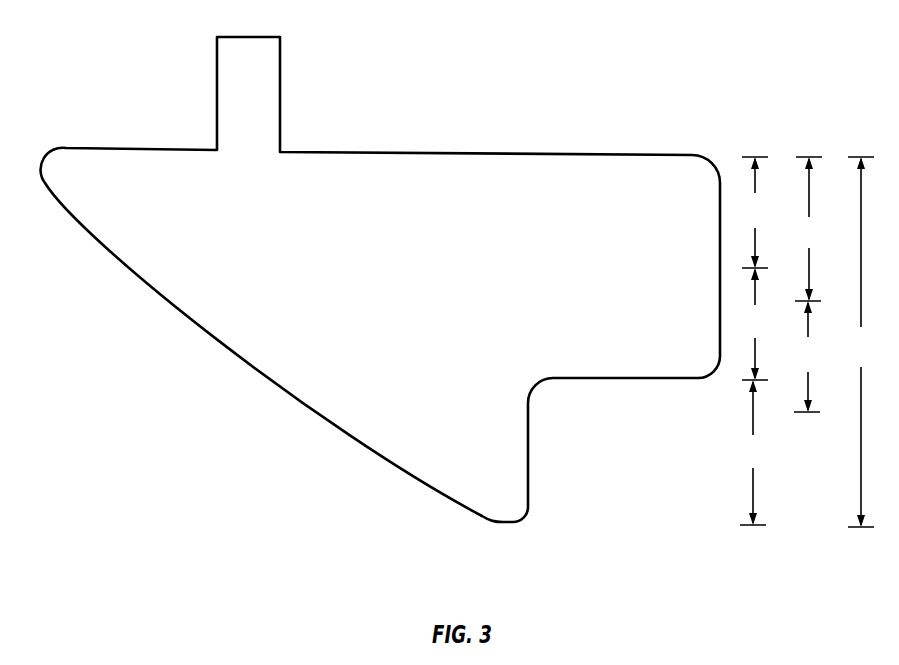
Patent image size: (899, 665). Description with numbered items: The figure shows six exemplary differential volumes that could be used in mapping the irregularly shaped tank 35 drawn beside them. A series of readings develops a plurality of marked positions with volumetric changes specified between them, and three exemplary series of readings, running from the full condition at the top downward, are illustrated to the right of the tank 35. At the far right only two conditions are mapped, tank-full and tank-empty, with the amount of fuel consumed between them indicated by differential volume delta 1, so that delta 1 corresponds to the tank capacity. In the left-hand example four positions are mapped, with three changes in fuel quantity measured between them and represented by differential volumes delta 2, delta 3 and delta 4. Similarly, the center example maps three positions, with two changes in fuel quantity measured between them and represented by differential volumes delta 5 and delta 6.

The tank 35 is at (288, 306).
The differential volume delta 1 is at (862, 342).
The differential volume delta 2 is at (755, 212).
The differential volume delta 3 is at (755, 324).
The differential volume delta 4 is at (753, 452).
The differential volume delta 5 is at (809, 229).
The differential volume delta 6 is at (808, 356).